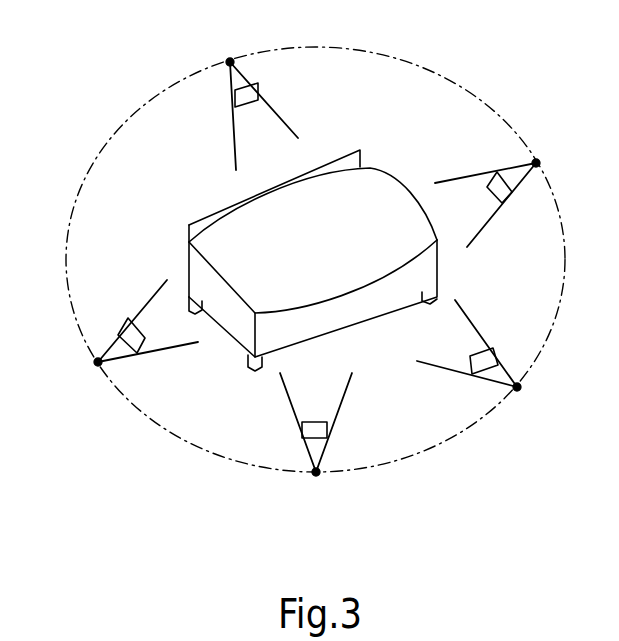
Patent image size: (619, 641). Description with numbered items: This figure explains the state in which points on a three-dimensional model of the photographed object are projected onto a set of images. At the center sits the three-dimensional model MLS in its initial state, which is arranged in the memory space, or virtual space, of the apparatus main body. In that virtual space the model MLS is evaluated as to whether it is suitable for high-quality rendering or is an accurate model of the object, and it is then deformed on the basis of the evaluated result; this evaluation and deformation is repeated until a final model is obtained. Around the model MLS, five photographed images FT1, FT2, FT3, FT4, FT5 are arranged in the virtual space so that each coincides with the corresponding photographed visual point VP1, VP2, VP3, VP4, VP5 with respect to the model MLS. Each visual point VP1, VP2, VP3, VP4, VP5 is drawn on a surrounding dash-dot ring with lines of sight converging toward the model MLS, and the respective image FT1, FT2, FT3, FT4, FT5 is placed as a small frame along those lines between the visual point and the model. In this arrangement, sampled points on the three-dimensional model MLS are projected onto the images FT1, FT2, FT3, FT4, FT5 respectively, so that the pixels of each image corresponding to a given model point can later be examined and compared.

The three-dimensional model MLS is at (397, 200).
The photographed visual point VP1 is at (517, 387).
The photographed visual point VP2 is at (316, 472).
The photographed visual point VP3 is at (98, 362).
The photographed visual point VP4 is at (230, 62).
The photographed visual point VP5 is at (536, 163).
The image FT1 is at (492, 348).
The image FT2 is at (327, 427).
The image FT3 is at (137, 353).
The image FT4 is at (258, 91).
The image FT5 is at (501, 202).